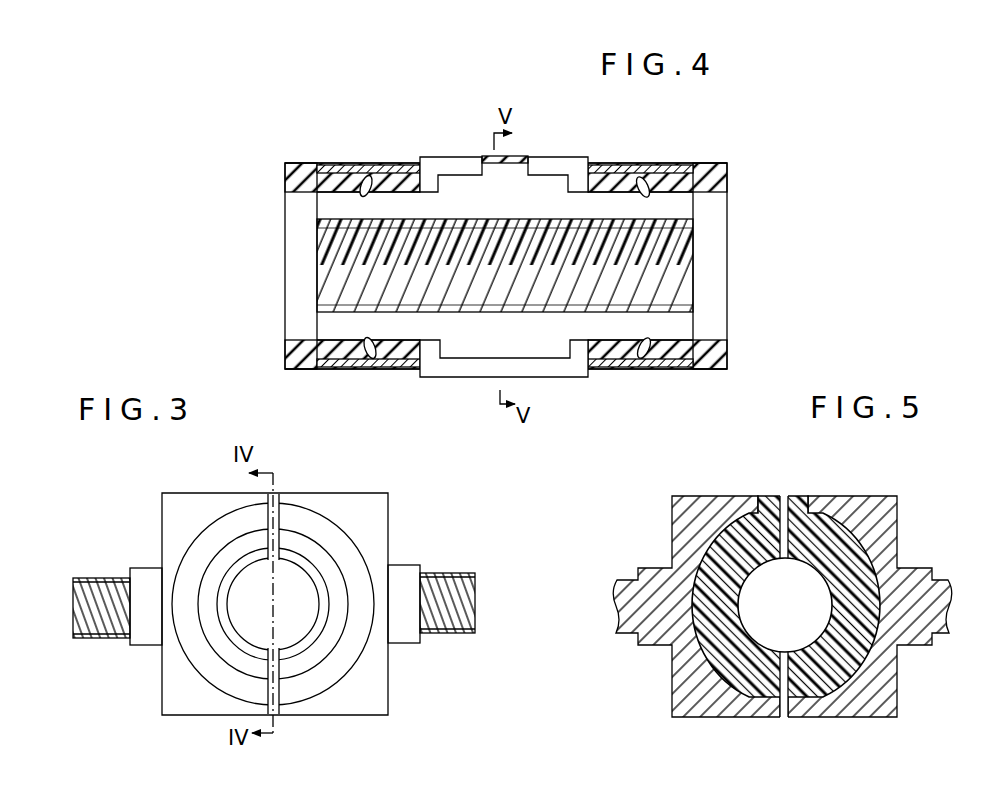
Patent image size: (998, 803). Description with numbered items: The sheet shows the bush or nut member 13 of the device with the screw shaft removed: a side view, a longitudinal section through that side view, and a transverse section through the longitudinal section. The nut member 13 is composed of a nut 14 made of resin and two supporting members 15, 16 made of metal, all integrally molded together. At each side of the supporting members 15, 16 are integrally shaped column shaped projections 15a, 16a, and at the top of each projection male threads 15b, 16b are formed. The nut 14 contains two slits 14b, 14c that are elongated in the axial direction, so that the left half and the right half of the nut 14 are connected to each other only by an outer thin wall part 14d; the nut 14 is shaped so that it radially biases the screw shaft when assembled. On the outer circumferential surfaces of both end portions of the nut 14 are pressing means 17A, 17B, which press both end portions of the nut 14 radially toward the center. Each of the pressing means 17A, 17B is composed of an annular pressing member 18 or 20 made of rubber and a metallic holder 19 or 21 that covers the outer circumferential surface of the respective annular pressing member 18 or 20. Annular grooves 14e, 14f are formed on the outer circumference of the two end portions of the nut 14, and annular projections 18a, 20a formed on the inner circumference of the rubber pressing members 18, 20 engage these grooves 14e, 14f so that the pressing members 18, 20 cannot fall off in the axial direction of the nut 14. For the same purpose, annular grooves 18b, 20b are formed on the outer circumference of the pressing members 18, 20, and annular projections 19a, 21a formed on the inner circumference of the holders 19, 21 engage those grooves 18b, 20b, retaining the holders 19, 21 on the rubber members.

In FIG. 4, the nut member 13 is at (420, 152).
In FIG. 4, the nut 14 is at (465, 187).
In FIG. 3, the nut 14 is at (325, 647).
In FIG. 5, the nut 14 is at (727, 652).
In FIG. 4, the slit 14b is at (678, 200).
In FIG. 3, the slit 14b is at (278, 540).
In FIG. 5, the slit 14b is at (790, 540).
In FIG. 4, the slit 14c is at (678, 325).
In FIG. 3, the slit 14c is at (280, 670).
In FIG. 5, the slit 14c is at (786, 676).
In FIG. 4, the outer thin wall part 14d is at (488, 155).
In FIG. 5, the outer thin wall part 14d is at (784, 495).
In FIG. 4, the annular groove 14e is at (370, 338).
In FIG. 4, the annular groove 14f is at (643, 338).
In FIG. 4, the supporting member 15 is at (435, 160).
In FIG. 3, the supporting member 15 is at (180, 512).
In FIG. 5, the supporting member 15 is at (680, 518).
In FIG. 3, the column shaped projection 15a is at (143, 580).
In FIG. 5, the column shaped projection 15a is at (658, 570).
In FIG. 3, the male threads 15b is at (95, 587).
In FIG. 3, the supporting member 16 is at (370, 515).
In FIG. 5, the supporting member 16 is at (880, 500).
In FIG. 3, the column shaped projection 16a is at (403, 572).
In FIG. 5, the column shaped projection 16a is at (913, 580).
In FIG. 3, the male threads 16b is at (453, 575).
In FIG. 4, the pressing means 17A is at (289, 160).
In FIG. 4, the pressing means 17B is at (706, 161).
In FIG. 4, the annular pressing member 18 is at (311, 167).
In FIG. 3, the annular pressing member 18 is at (193, 658).
In FIG. 4, the annular projection 18a is at (342, 370).
In FIG. 4, the annular groove 18b is at (370, 343).
In FIG. 4, the holder 19 is at (340, 167).
In FIG. 4, the annular projection 19a is at (372, 358).
In FIG. 4, the annular pressing member 20 is at (677, 180).
In FIG. 4, the annular projection 20a is at (623, 352).
In FIG. 4, the annular groove 20b is at (647, 355).
In FIG. 4, the holder 21 is at (603, 167).
In FIG. 4, the annular projection 21a is at (660, 372).